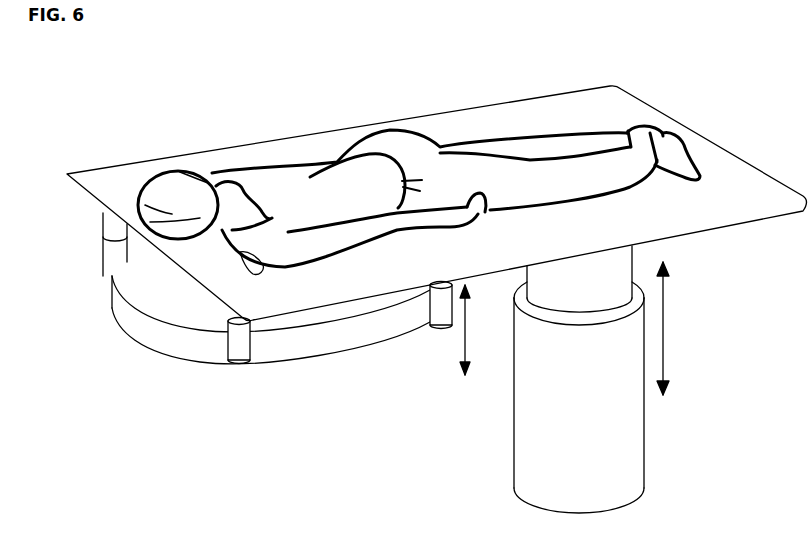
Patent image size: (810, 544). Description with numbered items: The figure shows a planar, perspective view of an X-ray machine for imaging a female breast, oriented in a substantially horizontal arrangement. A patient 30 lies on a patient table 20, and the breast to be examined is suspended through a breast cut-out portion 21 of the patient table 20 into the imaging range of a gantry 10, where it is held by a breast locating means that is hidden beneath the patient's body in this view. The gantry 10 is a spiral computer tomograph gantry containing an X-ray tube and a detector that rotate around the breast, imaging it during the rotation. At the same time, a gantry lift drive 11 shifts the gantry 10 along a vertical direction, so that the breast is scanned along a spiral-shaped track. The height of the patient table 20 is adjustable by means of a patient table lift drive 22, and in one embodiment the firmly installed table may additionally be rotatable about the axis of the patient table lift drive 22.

The gantry 10 is at (120, 316).
The gantry lift drive 11 is at (110, 250).
The patient table 20 is at (450, 118).
The breast cut-out portion 21 is at (242, 263).
The patient table lift drive 22 is at (527, 467).
The patient 30 is at (267, 187).